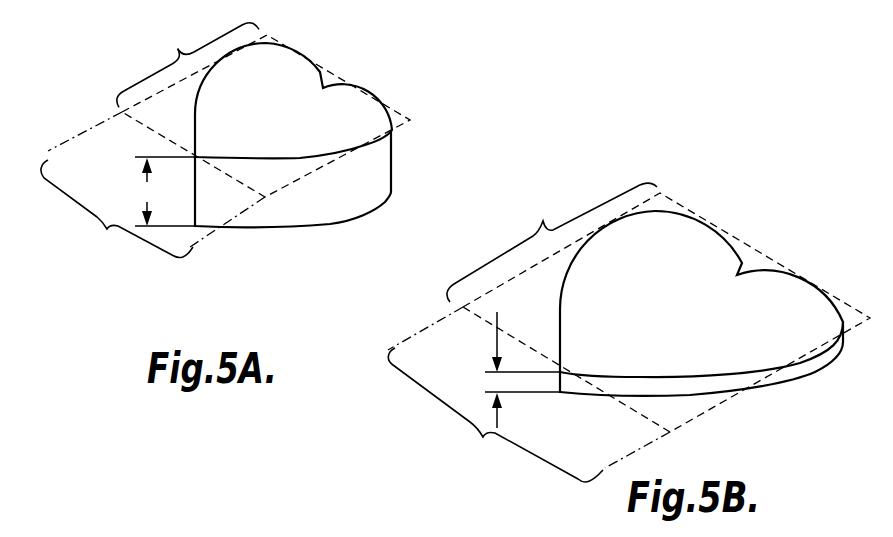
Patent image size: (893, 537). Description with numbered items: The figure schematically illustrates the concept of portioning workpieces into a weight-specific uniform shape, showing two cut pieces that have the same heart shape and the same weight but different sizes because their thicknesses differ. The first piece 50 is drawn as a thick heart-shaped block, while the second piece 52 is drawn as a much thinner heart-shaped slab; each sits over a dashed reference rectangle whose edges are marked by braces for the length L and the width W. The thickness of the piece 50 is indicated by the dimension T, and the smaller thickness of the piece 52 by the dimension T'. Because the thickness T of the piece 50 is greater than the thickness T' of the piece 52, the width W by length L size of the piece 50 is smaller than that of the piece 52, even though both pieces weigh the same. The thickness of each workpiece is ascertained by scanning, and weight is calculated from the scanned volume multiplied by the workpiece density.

In FIG. 5A, the piece 50 is at (365, 84).
In FIG. 5B, the piece 52 is at (713, 215).
In FIG. 5A, the length dimension L is at (188, 65).
In FIG. 5B, the length dimension L is at (552, 242).
In FIG. 5A, the width dimension W is at (117, 209).
In FIG. 5B, the width dimension W is at (495, 415).
In FIG. 5A, the thickness dimension T is at (166, 191).
In FIG. 5B, the reduced thickness dimension T' is at (523, 360).